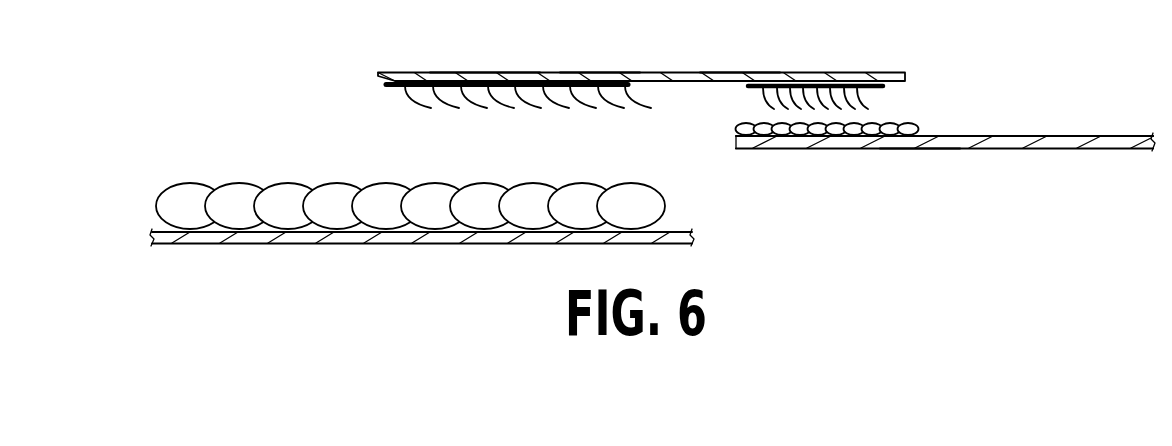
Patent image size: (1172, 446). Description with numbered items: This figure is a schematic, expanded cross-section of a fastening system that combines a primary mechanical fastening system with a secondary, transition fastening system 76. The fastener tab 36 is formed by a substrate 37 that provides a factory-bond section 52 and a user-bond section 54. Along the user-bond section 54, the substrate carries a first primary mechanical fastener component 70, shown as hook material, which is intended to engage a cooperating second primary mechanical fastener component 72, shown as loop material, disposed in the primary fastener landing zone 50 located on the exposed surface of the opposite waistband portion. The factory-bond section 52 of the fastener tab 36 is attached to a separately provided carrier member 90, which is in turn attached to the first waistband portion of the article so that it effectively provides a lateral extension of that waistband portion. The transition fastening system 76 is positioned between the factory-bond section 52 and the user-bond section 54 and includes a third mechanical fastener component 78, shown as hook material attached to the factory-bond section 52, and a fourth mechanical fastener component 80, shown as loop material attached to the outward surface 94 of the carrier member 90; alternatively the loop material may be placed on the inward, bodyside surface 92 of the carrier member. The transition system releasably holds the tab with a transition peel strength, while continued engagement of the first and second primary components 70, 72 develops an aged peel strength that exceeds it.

The fastener tab 36 is at (737, 72).
The substrate 37 is at (592, 72).
The primary fastener landing zone 50 is at (453, 183).
The factory-bond section 52 is at (873, 72).
The user-bond section 54 is at (483, 72).
The first primary mechanical fastener component 70 is at (408, 96).
The second primary mechanical fastener component 72 is at (193, 182).
The transition fastening system 76 is at (900, 103).
The third mechanical fastener component 78 is at (760, 98).
The fourth mechanical fastener component 80 is at (910, 127).
The carrier member 90 is at (1015, 152).
The inward bodyside surface 92 is at (917, 151).
The outward surface 94 is at (1103, 134).